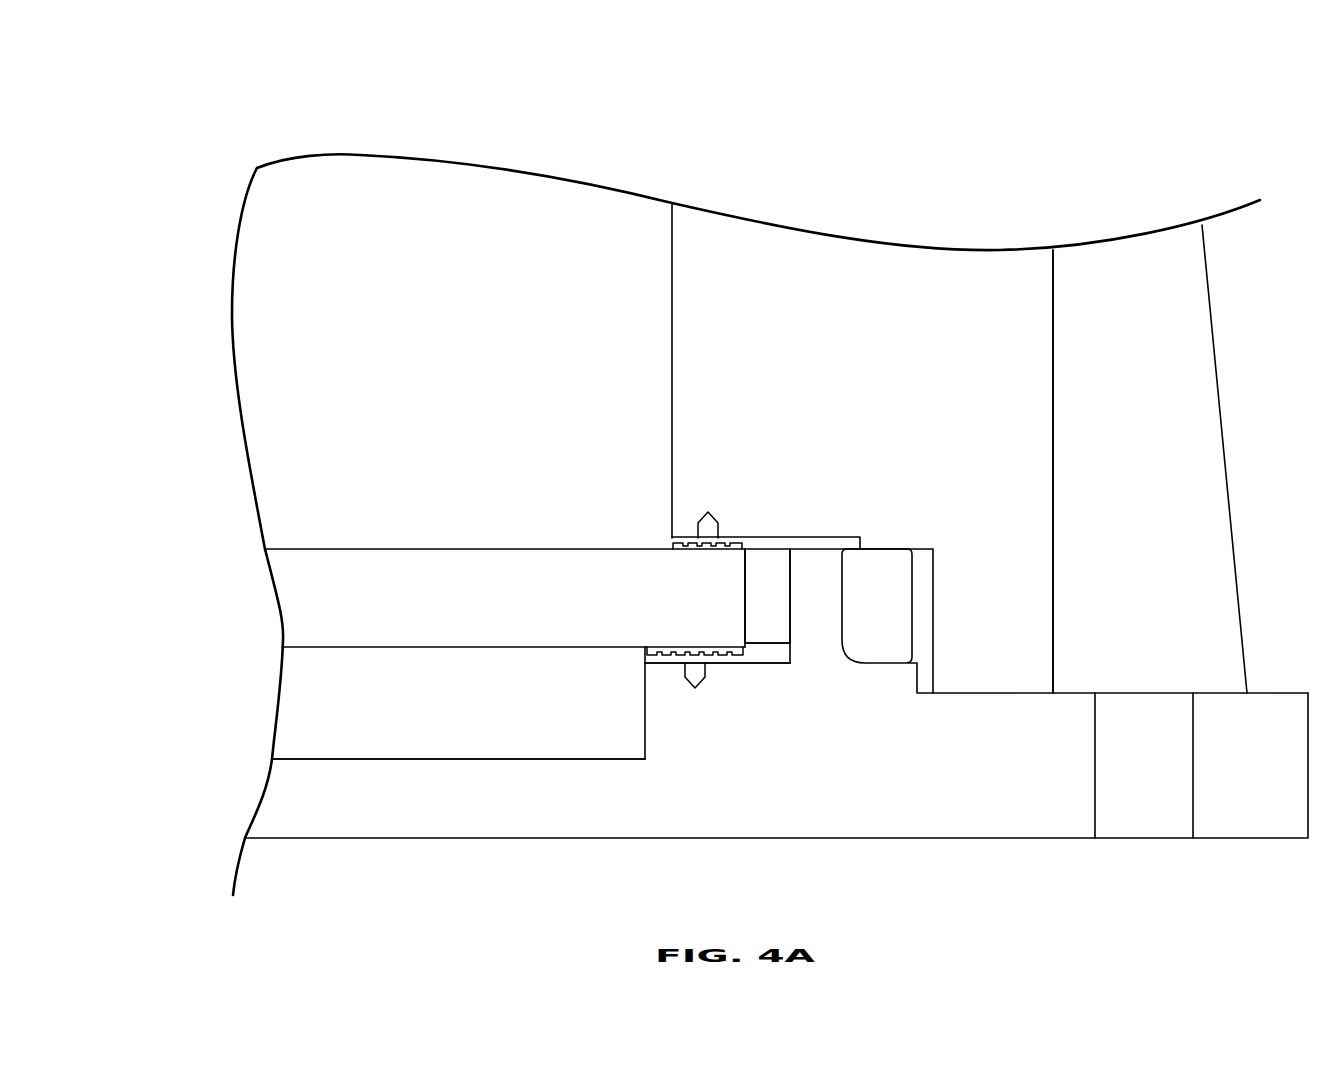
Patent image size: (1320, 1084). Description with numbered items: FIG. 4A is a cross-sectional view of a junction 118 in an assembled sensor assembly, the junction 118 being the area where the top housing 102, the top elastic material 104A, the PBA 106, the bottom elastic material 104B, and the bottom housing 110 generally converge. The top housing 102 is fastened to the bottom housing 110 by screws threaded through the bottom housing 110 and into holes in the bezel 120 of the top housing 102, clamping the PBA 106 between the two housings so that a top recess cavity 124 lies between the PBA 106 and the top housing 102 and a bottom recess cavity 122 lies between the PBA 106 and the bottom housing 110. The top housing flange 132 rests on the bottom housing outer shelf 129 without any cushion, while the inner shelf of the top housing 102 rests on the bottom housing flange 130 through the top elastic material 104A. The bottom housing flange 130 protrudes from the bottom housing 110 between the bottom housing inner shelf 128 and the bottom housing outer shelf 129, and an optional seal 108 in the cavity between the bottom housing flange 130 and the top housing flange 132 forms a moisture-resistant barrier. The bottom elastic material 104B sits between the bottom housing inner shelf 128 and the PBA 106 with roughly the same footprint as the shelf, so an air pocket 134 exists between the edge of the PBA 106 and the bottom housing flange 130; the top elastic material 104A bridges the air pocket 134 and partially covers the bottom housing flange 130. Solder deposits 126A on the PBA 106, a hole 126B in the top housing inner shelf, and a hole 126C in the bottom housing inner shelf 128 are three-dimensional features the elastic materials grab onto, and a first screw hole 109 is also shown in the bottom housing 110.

The top housing 102 is at (878, 290).
The junction 118 is at (648, 115).
The bezel 120 is at (1197, 390).
The top recess cavity 124 is at (268, 455).
The PBA 106 is at (288, 610).
The bottom recess cavity 122 is at (288, 740).
The top elastic material 104A is at (768, 540).
The bottom elastic material 104B is at (767, 653).
The solder deposits 126A is at (742, 553).
The hole 126B is at (705, 522).
The hole 126C is at (693, 688).
The air pocket 134 is at (780, 607).
The bottom housing flange 130 is at (827, 573).
The seal 108 is at (897, 627).
The top housing flange 132 is at (1067, 549).
The bottom housing inner shelf 128 is at (668, 665).
The bottom housing outer shelf 129 is at (1033, 693).
The first screw hole 109 is at (1145, 822).
The bottom housing 110 is at (420, 815).